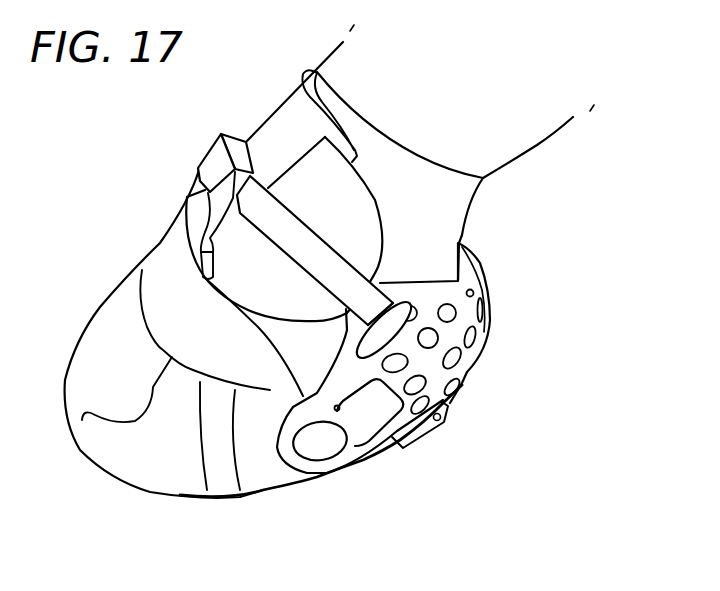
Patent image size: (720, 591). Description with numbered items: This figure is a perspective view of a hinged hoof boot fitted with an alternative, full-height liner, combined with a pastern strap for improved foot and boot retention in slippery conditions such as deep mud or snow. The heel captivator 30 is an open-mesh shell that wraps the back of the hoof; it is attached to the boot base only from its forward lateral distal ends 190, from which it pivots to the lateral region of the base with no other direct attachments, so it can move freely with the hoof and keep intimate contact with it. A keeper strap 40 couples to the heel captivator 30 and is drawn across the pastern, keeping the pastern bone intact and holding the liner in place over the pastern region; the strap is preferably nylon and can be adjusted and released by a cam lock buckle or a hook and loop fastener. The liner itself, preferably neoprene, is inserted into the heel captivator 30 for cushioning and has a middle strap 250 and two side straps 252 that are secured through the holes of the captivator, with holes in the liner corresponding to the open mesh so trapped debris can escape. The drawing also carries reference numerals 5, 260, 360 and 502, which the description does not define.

The hoof and pastern of animal 5 is at (537, 145).
The heel captivator 30 is at (468, 385).
The keeper strap 40 is at (270, 236).
The forward lateral distal ends 190 is at (351, 451).
The middle strap 250 is at (485, 268).
The side straps 252 is at (399, 438).
The collar 260 is at (447, 208).
The buckle 360 is at (212, 157).
The fastener 502 is at (2, 587).